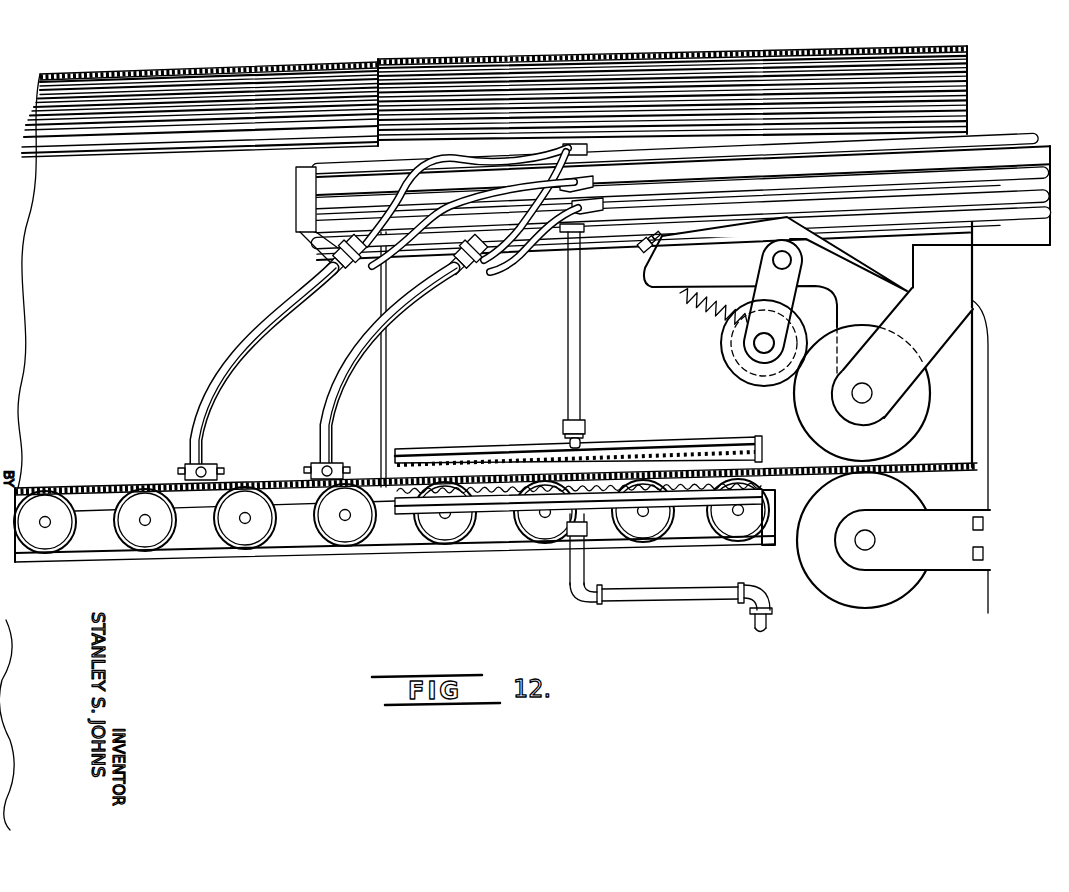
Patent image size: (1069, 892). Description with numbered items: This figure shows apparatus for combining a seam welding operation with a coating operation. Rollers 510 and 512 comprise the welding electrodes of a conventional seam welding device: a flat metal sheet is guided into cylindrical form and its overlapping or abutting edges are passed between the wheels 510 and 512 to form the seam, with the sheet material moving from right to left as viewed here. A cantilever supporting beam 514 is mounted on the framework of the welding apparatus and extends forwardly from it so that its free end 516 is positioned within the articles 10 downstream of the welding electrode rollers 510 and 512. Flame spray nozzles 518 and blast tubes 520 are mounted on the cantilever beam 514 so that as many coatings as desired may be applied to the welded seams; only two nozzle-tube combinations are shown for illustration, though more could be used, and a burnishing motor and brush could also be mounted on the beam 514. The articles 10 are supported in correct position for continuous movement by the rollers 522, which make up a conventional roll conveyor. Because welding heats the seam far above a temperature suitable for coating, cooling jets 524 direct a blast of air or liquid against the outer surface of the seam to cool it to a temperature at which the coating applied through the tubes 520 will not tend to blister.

The articles 10 is at (244, 68).
The welding electrode roller 510 is at (799, 402).
The welding electrode roller 512 is at (894, 600).
The cantilever supporting beam 514 is at (397, 165).
The free end 516 is at (297, 200).
The flame spray nozzle 518 is at (338, 272).
The blast tube 520 is at (245, 347).
The roller 522 is at (48, 553).
The cooling jet 524 is at (472, 460).